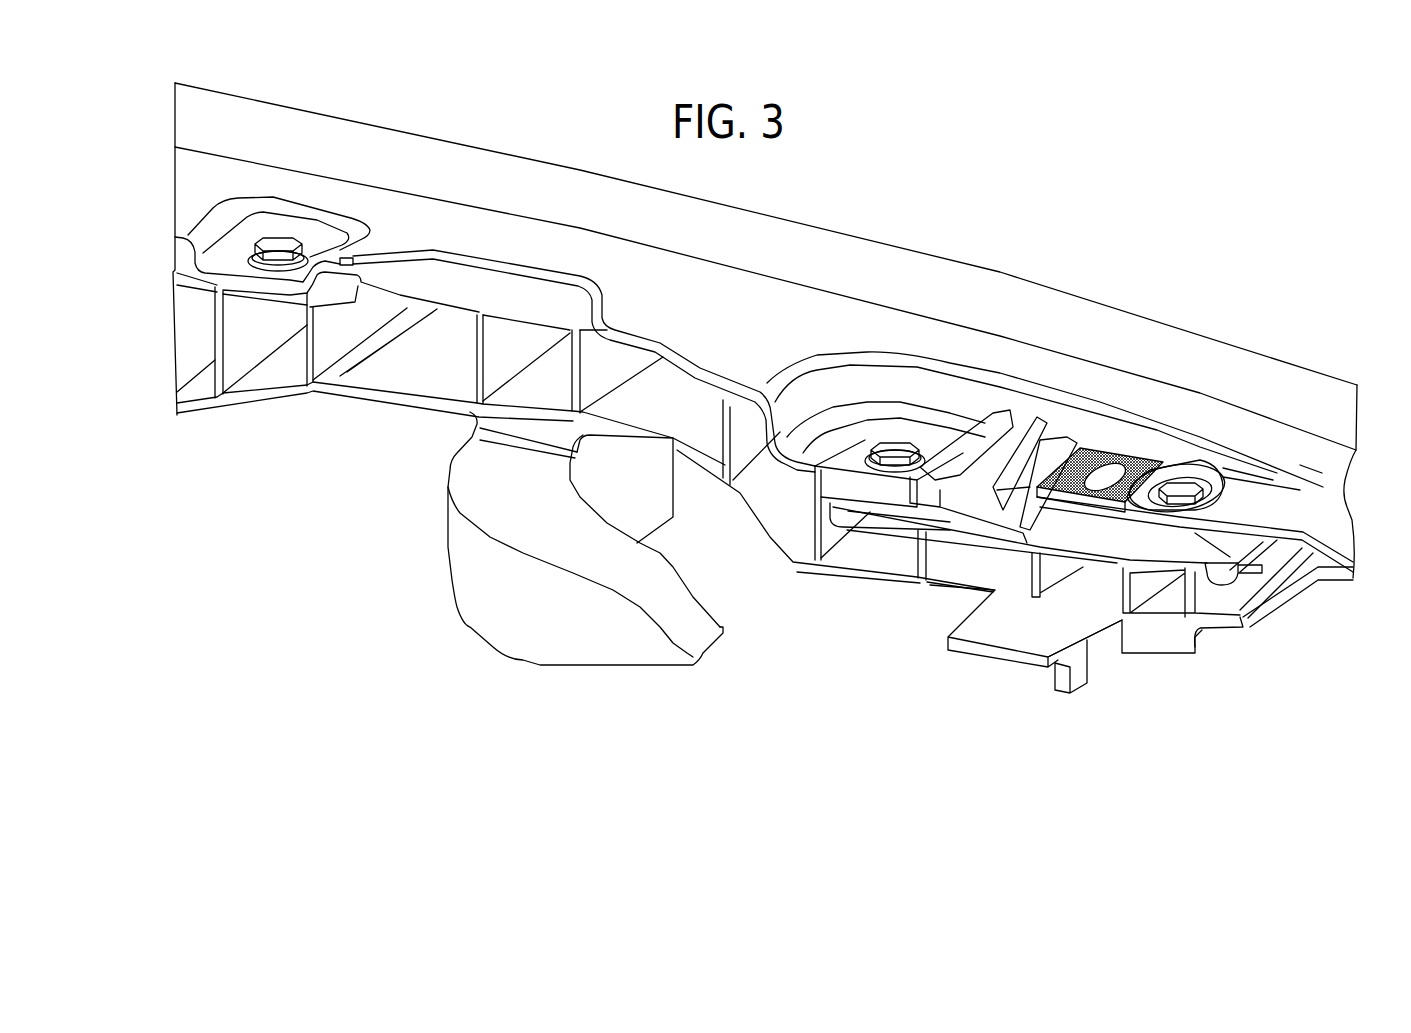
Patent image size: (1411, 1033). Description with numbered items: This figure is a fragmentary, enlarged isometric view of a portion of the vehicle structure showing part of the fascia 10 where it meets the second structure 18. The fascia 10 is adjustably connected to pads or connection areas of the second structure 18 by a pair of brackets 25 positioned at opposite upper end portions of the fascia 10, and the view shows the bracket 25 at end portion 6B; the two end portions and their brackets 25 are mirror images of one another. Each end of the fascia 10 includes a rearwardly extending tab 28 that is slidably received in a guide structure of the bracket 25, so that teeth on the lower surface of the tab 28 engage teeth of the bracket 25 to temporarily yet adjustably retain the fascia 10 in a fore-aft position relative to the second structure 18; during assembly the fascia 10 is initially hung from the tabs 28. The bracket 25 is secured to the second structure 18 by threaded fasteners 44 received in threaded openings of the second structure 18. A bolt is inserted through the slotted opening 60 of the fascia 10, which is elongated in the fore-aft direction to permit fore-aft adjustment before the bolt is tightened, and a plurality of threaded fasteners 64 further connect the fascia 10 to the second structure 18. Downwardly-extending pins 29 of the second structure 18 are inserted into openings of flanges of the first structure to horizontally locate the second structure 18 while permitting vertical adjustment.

The fascia 10 is at (1205, 327).
The second structure 18 is at (875, 590).
The bracket 25 is at (1203, 577).
The tab 28 is at (957, 520).
The pin 29 is at (1057, 672).
The threaded fastener 44 is at (865, 462).
The slotted opening 60 is at (1104, 470).
The threaded fastener 64 is at (277, 258).
The upper end portion 6B is at (1190, 487).